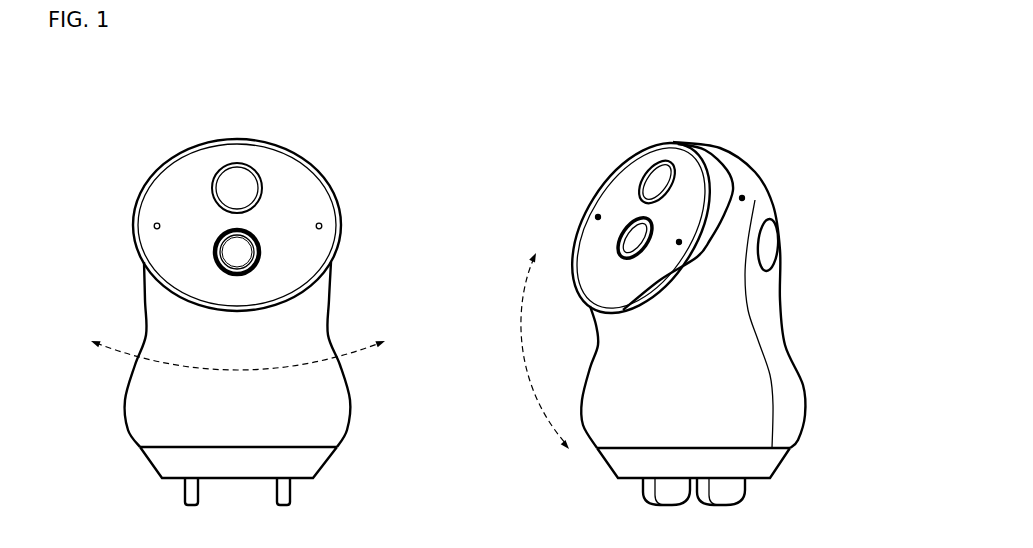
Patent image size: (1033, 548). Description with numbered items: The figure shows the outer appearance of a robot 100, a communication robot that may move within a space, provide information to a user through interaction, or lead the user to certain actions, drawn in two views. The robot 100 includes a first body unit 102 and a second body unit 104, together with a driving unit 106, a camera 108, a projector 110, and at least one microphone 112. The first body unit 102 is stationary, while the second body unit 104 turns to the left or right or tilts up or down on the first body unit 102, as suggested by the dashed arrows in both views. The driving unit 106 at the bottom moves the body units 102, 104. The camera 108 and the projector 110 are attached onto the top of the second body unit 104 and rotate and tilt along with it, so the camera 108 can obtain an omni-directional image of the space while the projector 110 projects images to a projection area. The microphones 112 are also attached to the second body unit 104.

The robot 100 is at (195, 93).
The first body unit 102 is at (318, 457).
The second body unit 104 is at (317, 298).
The driving unit 106 is at (285, 493).
The camera 108 is at (260, 178).
The projector 110 is at (213, 256).
The microphone 112 is at (154, 226).